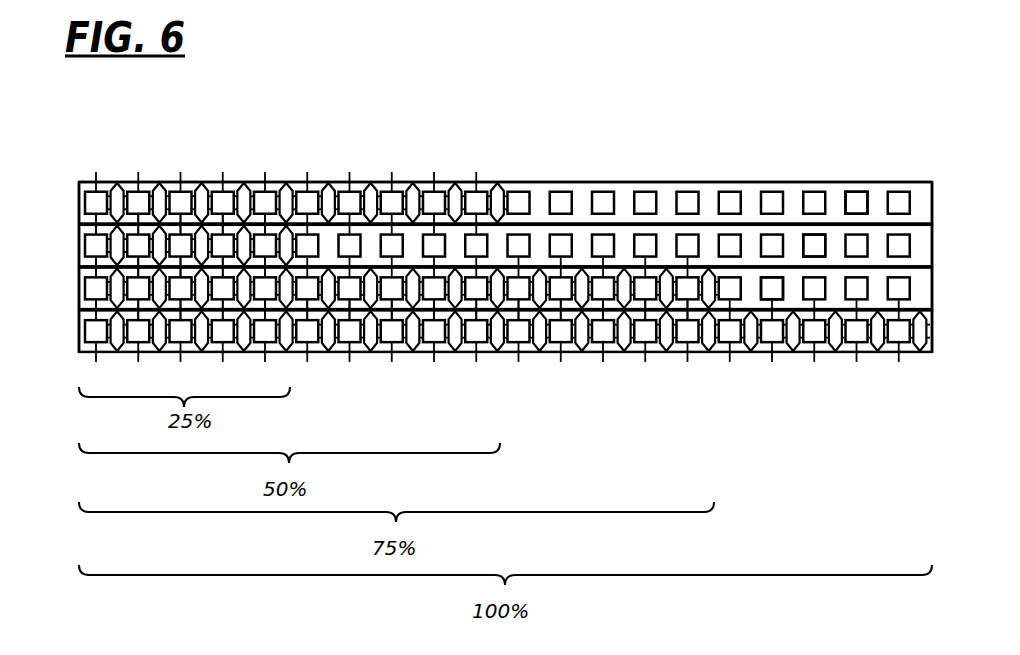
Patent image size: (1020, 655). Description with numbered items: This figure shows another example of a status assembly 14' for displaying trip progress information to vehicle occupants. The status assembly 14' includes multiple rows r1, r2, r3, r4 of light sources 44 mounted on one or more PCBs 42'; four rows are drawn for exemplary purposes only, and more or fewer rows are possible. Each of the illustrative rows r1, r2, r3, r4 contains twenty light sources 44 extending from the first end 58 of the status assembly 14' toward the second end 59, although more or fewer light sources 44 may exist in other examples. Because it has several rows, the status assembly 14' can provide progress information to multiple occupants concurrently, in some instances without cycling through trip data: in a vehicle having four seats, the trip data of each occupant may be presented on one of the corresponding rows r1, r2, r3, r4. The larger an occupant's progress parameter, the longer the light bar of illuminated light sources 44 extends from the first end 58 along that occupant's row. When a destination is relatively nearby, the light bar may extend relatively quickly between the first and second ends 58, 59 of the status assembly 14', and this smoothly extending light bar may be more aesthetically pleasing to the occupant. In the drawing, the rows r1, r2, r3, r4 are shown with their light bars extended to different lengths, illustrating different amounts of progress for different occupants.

The status assembly 14' is at (475, 220).
The PCB 42' is at (505, 160).
The light sources 44 is at (764, 277).
The first end 58 is at (78, 200).
The second end 59 is at (933, 182).
The first row r1 is at (60, 205).
The second row r2 is at (60, 248).
The third row r3 is at (60, 291).
The fourth row r4 is at (60, 334).